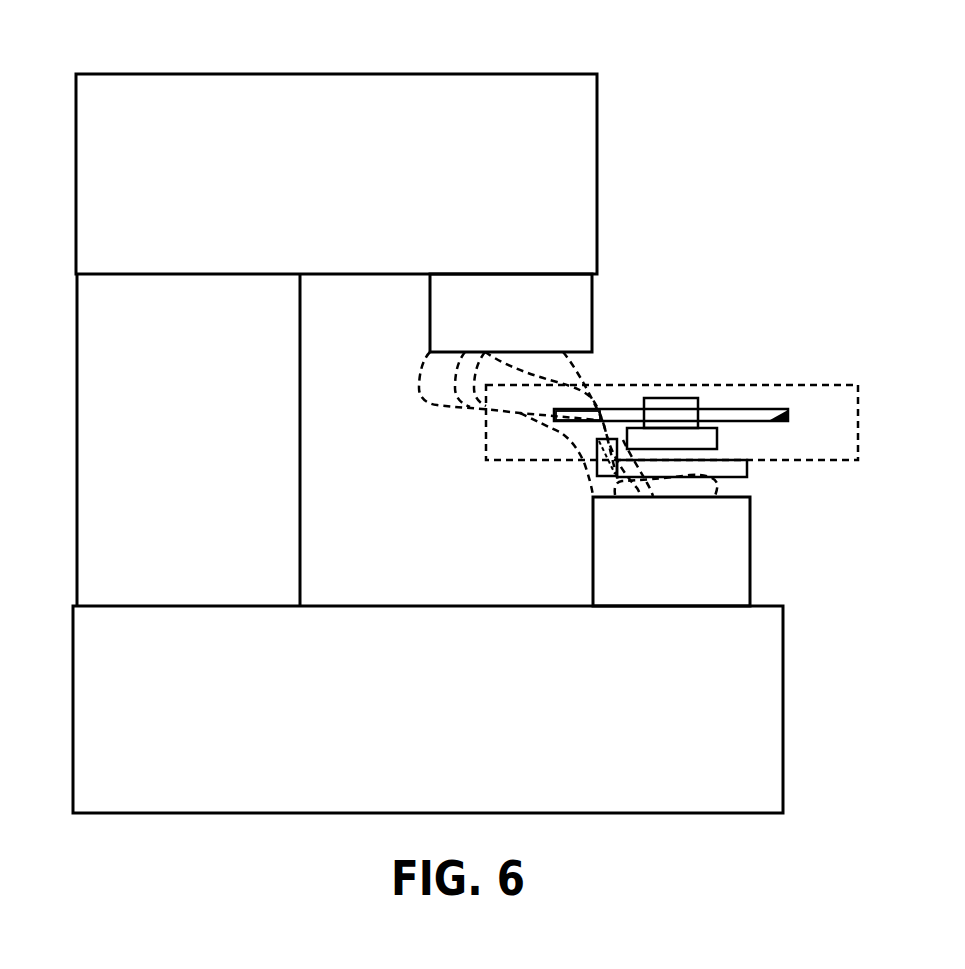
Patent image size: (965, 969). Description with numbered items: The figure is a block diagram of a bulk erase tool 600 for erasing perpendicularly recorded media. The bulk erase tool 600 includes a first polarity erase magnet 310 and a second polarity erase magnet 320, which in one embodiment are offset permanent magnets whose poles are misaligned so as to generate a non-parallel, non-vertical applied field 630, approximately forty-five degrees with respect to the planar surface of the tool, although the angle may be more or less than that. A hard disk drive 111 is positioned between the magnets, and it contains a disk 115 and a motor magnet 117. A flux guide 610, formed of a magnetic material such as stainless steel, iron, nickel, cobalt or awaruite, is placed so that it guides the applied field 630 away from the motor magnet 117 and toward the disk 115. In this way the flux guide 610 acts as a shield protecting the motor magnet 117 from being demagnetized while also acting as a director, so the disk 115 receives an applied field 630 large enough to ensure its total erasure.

The bulk erase tool 600 is at (484, 50).
The first polarity erase magnet 310 is at (536, 328).
The second polarity erase magnet 320 is at (696, 565).
The hard disk drive 111 is at (858, 427).
The disk 115 is at (788, 420).
The motor magnet 117 is at (672, 405).
The flux guide 610 is at (747, 477).
The applied field 630 is at (437, 387).